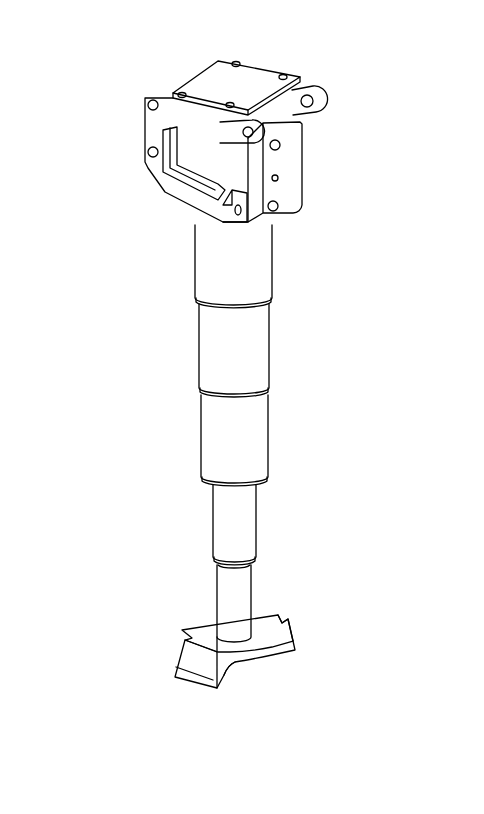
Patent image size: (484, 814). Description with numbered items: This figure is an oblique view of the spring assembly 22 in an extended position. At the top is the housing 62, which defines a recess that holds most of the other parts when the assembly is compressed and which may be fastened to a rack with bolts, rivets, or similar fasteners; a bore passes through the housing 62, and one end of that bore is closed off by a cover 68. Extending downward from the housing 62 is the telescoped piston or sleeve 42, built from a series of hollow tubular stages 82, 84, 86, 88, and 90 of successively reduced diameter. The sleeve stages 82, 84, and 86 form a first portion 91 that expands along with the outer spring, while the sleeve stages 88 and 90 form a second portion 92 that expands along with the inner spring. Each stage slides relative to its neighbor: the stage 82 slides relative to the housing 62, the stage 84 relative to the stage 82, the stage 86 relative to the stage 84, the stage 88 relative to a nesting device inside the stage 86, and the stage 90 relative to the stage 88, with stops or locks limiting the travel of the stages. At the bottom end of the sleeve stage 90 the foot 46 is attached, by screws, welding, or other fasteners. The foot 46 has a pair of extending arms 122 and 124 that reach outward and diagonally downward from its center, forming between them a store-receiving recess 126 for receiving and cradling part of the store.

The spring assembly 22 is at (78, 198).
The telescoped piston or sleeve 42 is at (124, 388).
The foot 46 is at (285, 650).
The housing 62 is at (248, 165).
The cover 68 is at (222, 85).
The sleeve stage 82 is at (195, 255).
The sleeve stage 84 is at (210, 340).
The sleeve stage 86 is at (213, 440).
The sleeve stage 88 is at (228, 525).
The sleeve stage 90 is at (232, 595).
The first portion 91 is at (298, 330).
The second portion 92 is at (280, 518).
The extending arm 122 is at (193, 665).
The extending arm 124 is at (292, 627).
The store-receiving recess 126 is at (245, 687).